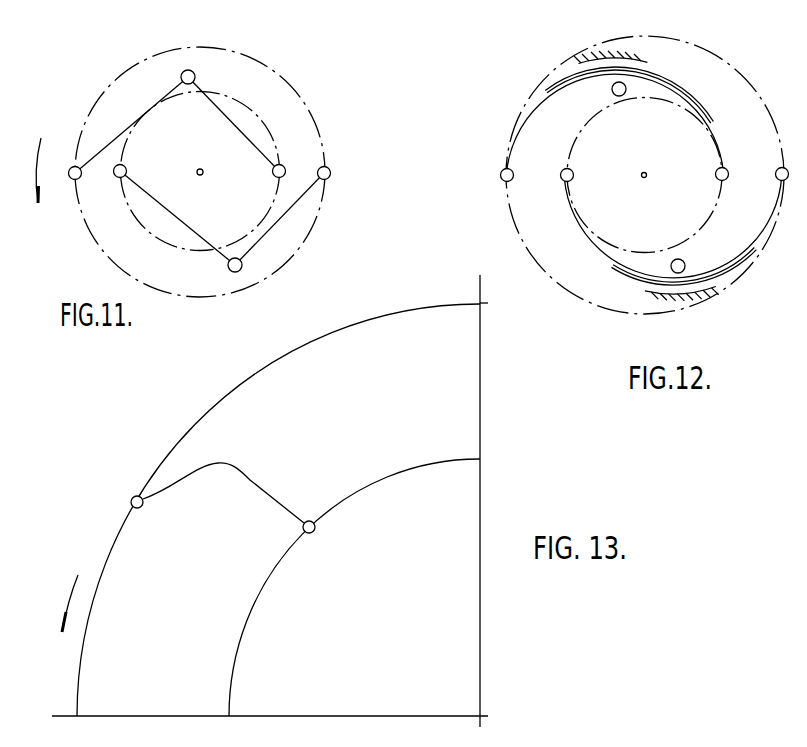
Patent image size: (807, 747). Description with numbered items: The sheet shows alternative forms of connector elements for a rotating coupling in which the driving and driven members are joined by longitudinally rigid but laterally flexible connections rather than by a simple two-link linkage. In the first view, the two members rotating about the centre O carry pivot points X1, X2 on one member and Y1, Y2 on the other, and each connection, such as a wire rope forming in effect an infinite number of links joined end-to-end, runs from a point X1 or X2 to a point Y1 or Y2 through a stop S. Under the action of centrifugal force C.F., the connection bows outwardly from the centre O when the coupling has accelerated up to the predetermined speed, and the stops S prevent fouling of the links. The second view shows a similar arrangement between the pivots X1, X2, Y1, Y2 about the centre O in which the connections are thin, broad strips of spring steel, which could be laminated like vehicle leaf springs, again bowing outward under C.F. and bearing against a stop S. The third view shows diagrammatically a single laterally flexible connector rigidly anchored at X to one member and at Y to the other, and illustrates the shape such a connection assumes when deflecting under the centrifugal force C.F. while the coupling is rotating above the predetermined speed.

In FIG. 11, the pivot point on driving member X1 is at (65, 191).
In FIG. 12, the pivot point on driving member X1 is at (525, 188).
In FIG. 11, the pivot point on driving member X2 is at (340, 191).
In FIG. 12, the pivot point on driving member X2 is at (768, 164).
In FIG. 11, the pivot point on driven member Y1 is at (290, 187).
In FIG. 12, the pivot point on driven member Y1 is at (737, 186).
In FIG. 11, the pivot point on driven member Y2 is at (110, 188).
In FIG. 12, the pivot point on driven member Y2 is at (584, 188).
In FIG. 11, the stop S is at (188, 84).
In FIG. 12, the stop S is at (620, 96).
In FIG. 11, the centre of rotation O is at (200, 185).
In FIG. 12, the centre of rotation O is at (644, 190).
In FIG. 11, the centrifugal force C.F. is at (245, 288).
In FIG. 12, the centrifugal force C.F. is at (619, 82).
In FIG. 13, the centrifugal force C.F. is at (479, 716).
In FIG. 13, the pivot or anchorage on driving member X is at (131, 502).
In FIG. 13, the pivot or anchorage on driven member Y is at (315, 529).